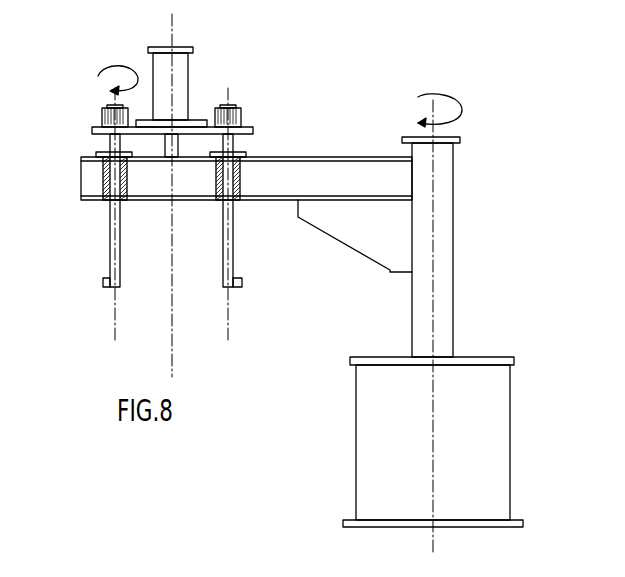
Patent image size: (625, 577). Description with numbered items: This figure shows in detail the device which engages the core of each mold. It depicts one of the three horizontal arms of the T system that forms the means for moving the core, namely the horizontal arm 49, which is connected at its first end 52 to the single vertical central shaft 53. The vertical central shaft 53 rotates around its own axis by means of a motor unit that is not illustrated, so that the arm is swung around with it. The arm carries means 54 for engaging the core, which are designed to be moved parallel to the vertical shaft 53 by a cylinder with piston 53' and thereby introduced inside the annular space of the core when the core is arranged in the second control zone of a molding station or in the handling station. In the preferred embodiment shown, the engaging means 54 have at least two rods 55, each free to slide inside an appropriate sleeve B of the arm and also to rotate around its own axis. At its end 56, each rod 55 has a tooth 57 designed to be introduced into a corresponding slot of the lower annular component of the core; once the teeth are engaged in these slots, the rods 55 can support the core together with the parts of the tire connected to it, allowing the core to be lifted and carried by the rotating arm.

The horizontal arm 49 is at (327, 173).
The first end 52 is at (410, 177).
The vertical central shaft 53 is at (433, 335).
The cylinder with piston 53' is at (201, 79).
The means for engaging the core 54 is at (217, 92).
The rod 55 is at (118, 248).
The end of rod 56 is at (121, 280).
The tooth 57 is at (107, 287).
The sleeve B is at (103, 202).